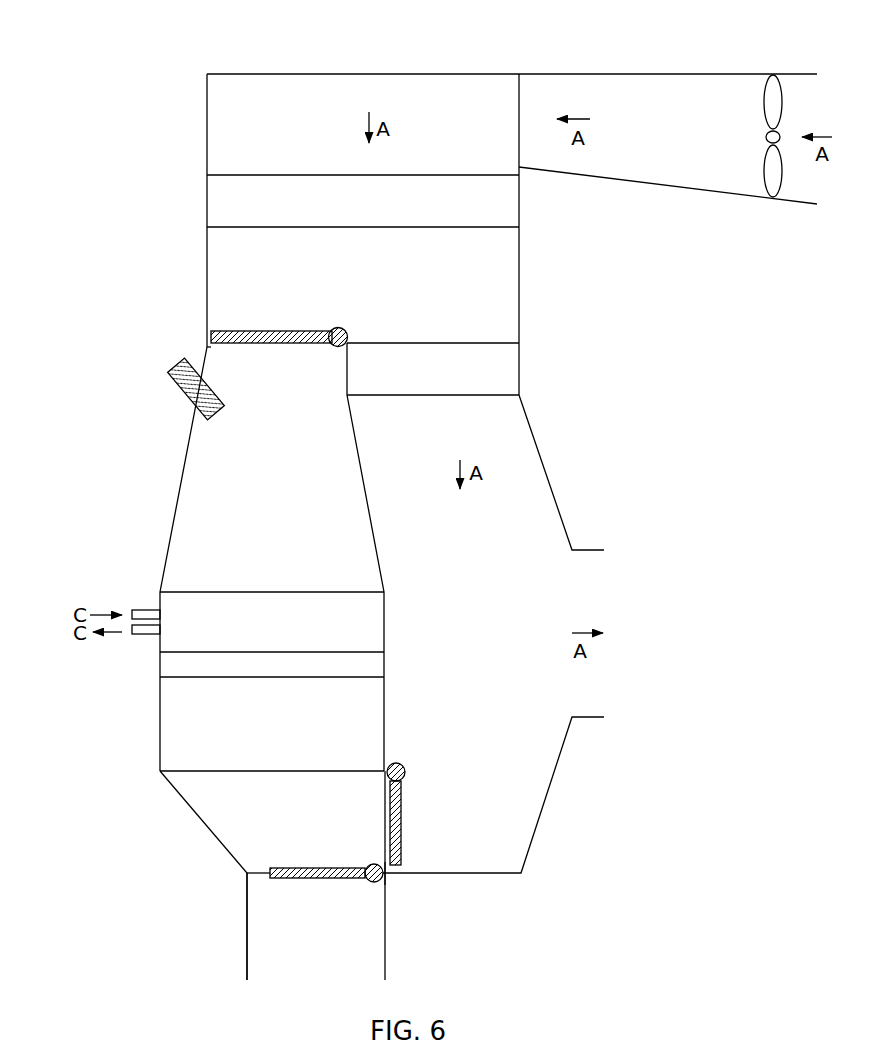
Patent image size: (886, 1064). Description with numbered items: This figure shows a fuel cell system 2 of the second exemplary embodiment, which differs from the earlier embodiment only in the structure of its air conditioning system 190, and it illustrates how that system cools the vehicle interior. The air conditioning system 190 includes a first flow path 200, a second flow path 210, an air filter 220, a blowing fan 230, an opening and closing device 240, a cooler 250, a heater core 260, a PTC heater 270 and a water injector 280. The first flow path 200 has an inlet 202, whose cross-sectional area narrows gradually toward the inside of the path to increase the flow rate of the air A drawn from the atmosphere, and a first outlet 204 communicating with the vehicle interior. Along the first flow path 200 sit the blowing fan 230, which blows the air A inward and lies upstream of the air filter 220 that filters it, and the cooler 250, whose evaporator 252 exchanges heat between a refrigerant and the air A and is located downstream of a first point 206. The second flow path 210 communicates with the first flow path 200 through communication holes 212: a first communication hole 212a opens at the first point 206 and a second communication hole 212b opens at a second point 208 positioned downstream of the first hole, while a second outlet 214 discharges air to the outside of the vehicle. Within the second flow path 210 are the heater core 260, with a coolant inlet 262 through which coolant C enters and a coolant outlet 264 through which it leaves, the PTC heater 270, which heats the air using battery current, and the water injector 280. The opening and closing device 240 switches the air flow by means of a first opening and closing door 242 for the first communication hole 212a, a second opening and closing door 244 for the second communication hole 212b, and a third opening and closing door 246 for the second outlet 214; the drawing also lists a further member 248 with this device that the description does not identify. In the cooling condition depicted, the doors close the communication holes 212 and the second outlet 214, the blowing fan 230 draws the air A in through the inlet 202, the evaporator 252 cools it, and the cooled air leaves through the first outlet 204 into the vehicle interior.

The fuel cell system 2 is at (30, 70).
The air conditioning system 190 is at (188, 196).
The first flow path 200 is at (455, 292).
The inlet 202 is at (508, 74).
The first outlet 204 is at (588, 550).
The first point 206 is at (207, 345).
The second point 208 is at (385, 865).
The second flow path 210 is at (252, 558).
The communication holes 212 is at (243, 366).
The first communication hole 212a is at (282, 386).
The second communication hole 212b is at (321, 848).
The second outlet 214 is at (246, 925).
The air filter 220 is at (519, 200).
The blowing fan 230 is at (766, 170).
The opening and closing device 240 is at (251, 608).
The first opening and closing door 242 is at (268, 331).
The second opening and closing door 244 is at (402, 820).
The third opening and closing door 246 is at (315, 880).
The fourth blade 248 is at (127, 932).
The cooler 250 is at (536, 357).
The evaporator 252 is at (506, 384).
The heater core 260 is at (180, 640).
The coolant inlet 262 is at (137, 609).
The coolant outlet 264 is at (137, 636).
The PTC heater 270 is at (180, 742).
The water injector 280 is at (185, 398).